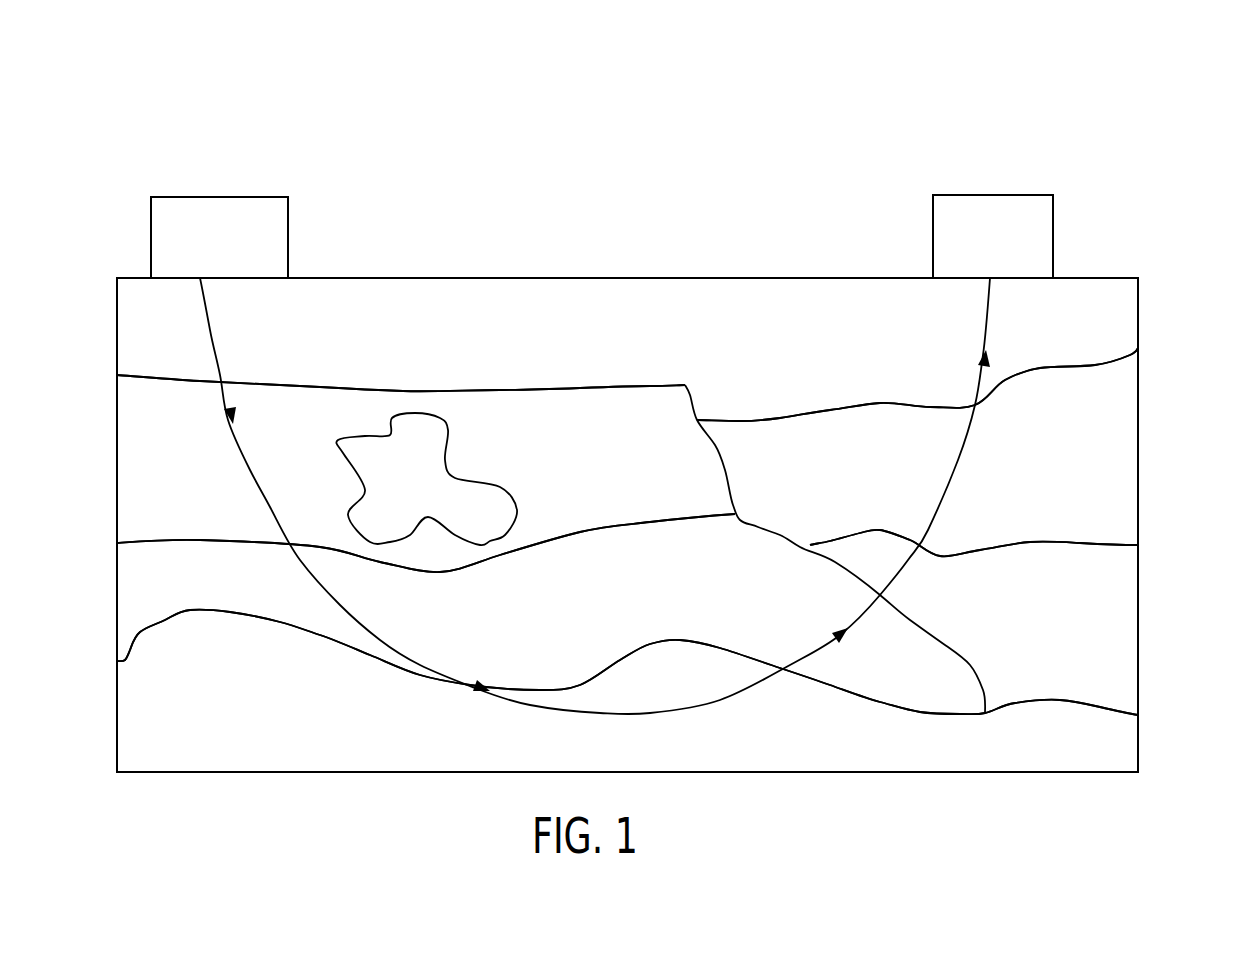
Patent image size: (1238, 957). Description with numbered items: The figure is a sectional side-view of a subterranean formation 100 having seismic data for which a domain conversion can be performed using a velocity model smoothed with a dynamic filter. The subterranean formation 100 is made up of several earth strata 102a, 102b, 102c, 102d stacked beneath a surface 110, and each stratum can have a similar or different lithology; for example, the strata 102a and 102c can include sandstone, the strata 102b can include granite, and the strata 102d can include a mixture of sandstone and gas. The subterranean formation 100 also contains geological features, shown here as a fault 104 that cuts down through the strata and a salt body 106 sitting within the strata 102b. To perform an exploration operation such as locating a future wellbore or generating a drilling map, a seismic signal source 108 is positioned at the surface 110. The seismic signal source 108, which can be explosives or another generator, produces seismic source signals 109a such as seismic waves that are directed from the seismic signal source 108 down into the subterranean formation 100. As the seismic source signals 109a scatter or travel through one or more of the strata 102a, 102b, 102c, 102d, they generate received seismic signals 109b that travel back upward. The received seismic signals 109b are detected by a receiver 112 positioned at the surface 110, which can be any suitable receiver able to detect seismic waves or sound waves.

The subterranean formation 100 is at (196, 150).
The strata 102a is at (663, 355).
The strata 102b is at (116, 452).
The strata 102c is at (116, 608).
The strata 102d is at (663, 760).
The fault 104 is at (968, 662).
The salt body 106 is at (452, 440).
The seismic signal source 108 is at (270, 205).
The seismic source signals 109a is at (270, 507).
The received seismic signals 109b is at (958, 465).
The surface 110 is at (605, 278).
The receiver 112 is at (985, 210).